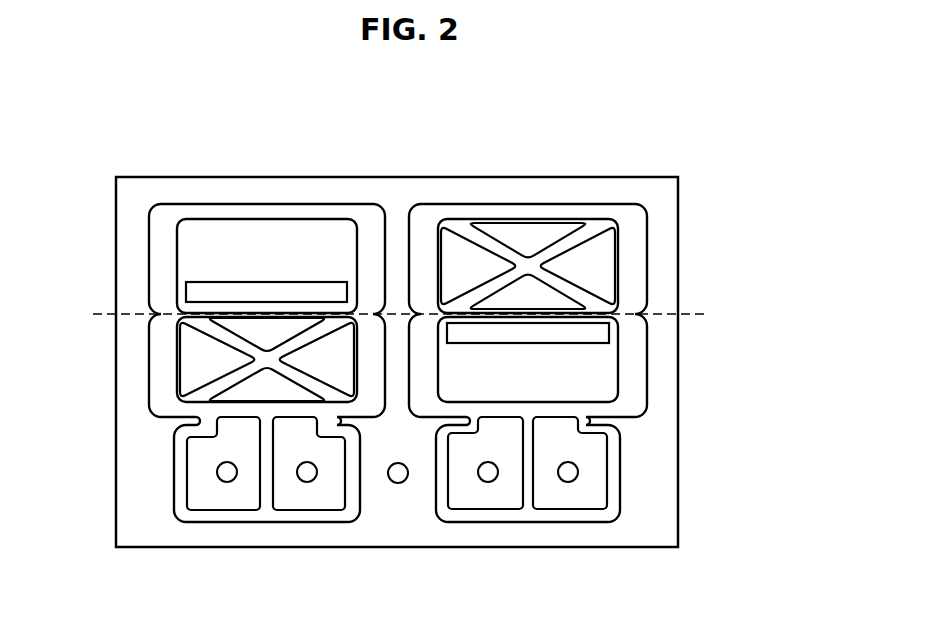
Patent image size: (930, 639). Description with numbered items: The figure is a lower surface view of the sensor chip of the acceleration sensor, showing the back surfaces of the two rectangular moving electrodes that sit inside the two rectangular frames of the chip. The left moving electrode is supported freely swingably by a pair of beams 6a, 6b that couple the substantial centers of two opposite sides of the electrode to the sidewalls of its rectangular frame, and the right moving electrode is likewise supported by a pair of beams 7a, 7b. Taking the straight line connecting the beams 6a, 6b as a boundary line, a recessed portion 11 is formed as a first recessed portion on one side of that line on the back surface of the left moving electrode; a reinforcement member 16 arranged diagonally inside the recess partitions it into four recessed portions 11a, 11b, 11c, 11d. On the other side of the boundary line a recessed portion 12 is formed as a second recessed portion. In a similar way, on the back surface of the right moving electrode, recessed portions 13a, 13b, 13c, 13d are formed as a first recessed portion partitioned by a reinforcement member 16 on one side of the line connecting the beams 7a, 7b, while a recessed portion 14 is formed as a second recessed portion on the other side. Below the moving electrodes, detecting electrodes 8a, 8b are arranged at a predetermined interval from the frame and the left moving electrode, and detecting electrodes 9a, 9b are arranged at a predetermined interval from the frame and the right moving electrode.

The beam 6a is at (152, 332).
The beam 6b is at (366, 312).
The beam 7a is at (423, 313).
The beam 7b is at (632, 312).
The detecting electrode 8a is at (202, 500).
The detecting electrode 8b is at (307, 500).
The detecting electrode 9a is at (489, 500).
The detecting electrode 9b is at (566, 500).
The recessed portion 11 is at (214, 360).
The recessed portion 11a is at (188, 368).
The recessed portion 11b is at (257, 327).
The recessed portion 11c is at (342, 367).
The recessed portion 11d is at (252, 387).
The recessed portion 12 is at (287, 282).
The recessed portion 13a is at (450, 242).
The recessed portion 13b is at (538, 236).
The recessed portion 13c is at (603, 238).
The recessed portion 13d is at (542, 295).
The recessed portion 14 is at (540, 337).
The reinforcement member 16 is at (530, 267).